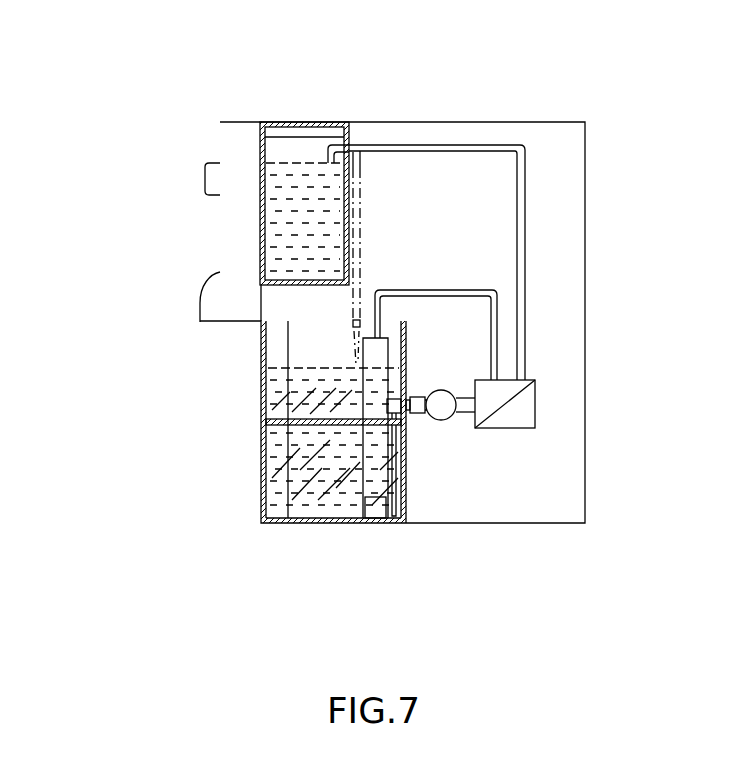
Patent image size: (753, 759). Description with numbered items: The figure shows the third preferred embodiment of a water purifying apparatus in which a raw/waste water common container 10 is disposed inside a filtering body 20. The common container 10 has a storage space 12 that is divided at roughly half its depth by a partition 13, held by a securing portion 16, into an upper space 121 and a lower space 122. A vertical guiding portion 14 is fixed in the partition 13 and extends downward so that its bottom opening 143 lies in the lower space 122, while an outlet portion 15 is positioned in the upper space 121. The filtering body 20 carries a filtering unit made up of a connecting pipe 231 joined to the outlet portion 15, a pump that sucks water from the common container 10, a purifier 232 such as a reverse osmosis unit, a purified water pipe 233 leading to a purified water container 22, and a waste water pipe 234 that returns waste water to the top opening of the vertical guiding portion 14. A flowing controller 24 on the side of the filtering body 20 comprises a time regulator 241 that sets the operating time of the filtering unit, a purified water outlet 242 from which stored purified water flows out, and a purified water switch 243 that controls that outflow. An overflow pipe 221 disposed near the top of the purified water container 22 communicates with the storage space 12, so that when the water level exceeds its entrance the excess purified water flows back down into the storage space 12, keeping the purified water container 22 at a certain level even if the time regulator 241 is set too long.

The raw/waste water common container 10 is at (291, 462).
The storage space 12 is at (249, 422).
The upper space 121 is at (317, 358).
The lower space 122 is at (327, 436).
The partition 13 is at (308, 427).
The vertical guiding portion 14 is at (339, 469).
The bottom opening 143 is at (377, 512).
The outlet portion 15 is at (387, 414).
The securing portion 16 is at (393, 520).
The filtering body 20 is at (598, 191).
The purified water container 22 is at (293, 150).
The overflow pipe 221 is at (360, 180).
The connecting pipe 231 is at (416, 414).
The purifier 232 is at (523, 407).
The purified water pipe 233 is at (420, 147).
The waste water pipe 234 is at (492, 338).
The flowing controller 24 is at (116, 255).
The time regulator 241 is at (205, 182).
The purified water outlet 242 is at (207, 323).
The purified water switch 243 is at (205, 298).